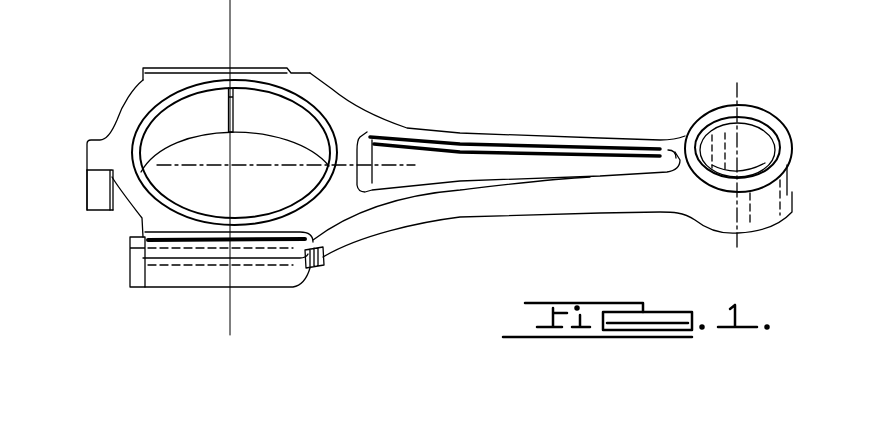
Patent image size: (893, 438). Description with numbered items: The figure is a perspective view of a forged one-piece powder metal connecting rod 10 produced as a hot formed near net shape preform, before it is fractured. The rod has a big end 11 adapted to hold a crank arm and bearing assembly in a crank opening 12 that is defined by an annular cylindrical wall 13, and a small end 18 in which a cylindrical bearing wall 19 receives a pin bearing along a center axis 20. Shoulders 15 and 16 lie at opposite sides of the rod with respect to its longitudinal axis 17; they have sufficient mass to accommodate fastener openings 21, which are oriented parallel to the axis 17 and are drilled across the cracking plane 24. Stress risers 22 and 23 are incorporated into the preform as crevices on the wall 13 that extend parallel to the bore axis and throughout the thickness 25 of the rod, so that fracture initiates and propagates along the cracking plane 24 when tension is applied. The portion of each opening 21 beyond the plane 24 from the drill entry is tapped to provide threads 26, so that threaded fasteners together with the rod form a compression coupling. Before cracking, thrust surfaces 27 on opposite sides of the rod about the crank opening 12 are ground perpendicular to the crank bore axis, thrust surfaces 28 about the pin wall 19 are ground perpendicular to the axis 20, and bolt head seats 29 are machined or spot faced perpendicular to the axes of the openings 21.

The connecting rod 10 is at (433, 242).
The big end 11 is at (115, 222).
The crank opening 12 is at (316, 129).
The annular cylindrical wall 13 is at (288, 128).
The shoulder 15 is at (143, 78).
The shoulder 16 is at (147, 260).
The longitudinal axis 17 is at (390, 150).
The small end 18 is at (788, 222).
The cylindrical bearing wall 19 is at (757, 138).
The center axis 20 is at (737, 83).
The fastener opening 21 is at (234, 268).
The stress riser 22 is at (237, 100).
The stress riser 23 is at (233, 217).
The cracking plane 24 is at (245, 179).
The thickness 25 is at (197, 53).
The threads 26 is at (327, 252).
The thrust surface 27 is at (131, 108).
The thrust surface 28 is at (782, 133).
The bolt head seat 29 is at (140, 84).